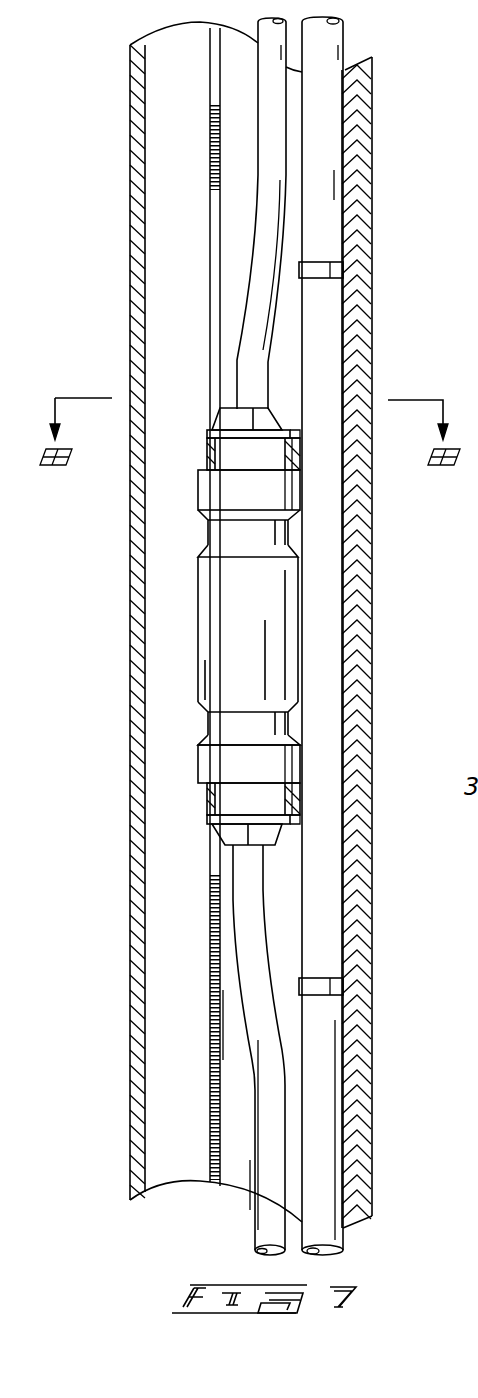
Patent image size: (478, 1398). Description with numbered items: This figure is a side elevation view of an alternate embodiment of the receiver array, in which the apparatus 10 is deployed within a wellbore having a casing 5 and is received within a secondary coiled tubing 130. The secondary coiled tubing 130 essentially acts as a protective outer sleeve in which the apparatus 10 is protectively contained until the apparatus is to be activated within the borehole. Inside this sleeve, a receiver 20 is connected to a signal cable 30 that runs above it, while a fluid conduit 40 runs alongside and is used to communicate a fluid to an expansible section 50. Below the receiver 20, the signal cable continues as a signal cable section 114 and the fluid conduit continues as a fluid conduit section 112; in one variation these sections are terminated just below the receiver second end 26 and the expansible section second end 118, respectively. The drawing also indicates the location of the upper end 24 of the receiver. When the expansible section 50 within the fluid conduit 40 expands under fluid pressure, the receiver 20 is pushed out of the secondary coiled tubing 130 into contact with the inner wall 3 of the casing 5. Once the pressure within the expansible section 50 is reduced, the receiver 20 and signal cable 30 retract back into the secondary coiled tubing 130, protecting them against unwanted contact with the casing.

The inner wall 3 is at (145, 293).
The casing 5 is at (373, 327).
The apparatus 10 is at (106, 703).
The receiver 20 is at (242, 602).
The upper connector 24 is at (240, 420).
The receiver second end 26 is at (240, 838).
The signal cable 30 is at (262, 230).
The fluid conduit 40 is at (345, 40).
The expansible section 50 is at (323, 655).
The fluid conduit section 112 is at (348, 1058).
The signal cable section 114 is at (250, 1041).
The expansible section second end 118 is at (332, 988).
The secondary coiled tubing 130 is at (208, 162).